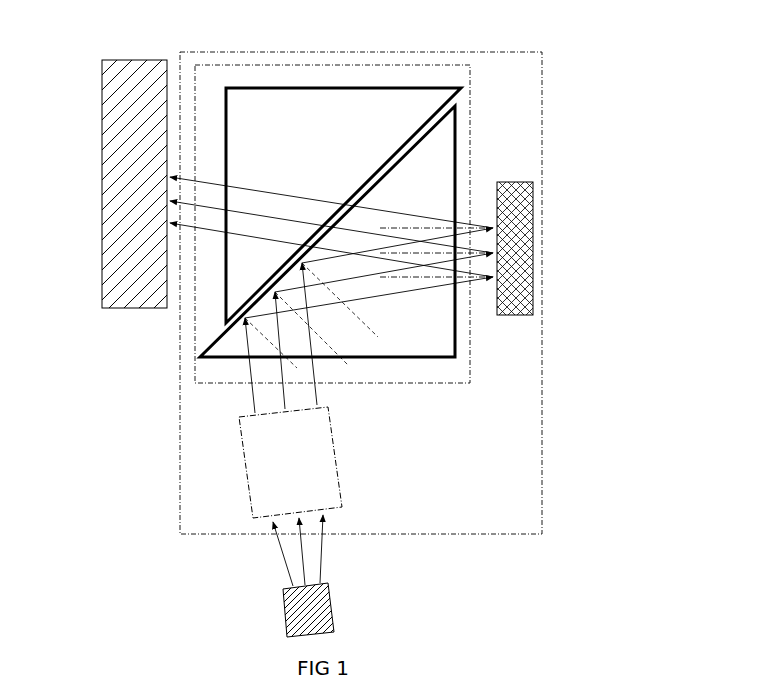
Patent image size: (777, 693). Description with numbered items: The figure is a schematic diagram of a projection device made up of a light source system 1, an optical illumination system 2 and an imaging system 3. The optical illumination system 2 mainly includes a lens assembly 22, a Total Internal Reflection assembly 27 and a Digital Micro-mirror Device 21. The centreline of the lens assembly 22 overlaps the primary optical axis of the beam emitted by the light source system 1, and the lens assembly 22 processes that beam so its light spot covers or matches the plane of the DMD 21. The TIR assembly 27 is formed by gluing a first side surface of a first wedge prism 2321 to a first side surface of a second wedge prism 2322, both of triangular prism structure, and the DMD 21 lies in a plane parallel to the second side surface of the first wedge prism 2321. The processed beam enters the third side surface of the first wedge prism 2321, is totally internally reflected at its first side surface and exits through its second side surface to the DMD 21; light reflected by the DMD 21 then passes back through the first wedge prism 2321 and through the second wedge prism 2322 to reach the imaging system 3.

The light source system 1 is at (330, 599).
The optical illumination system 2 is at (543, 383).
The imaging system 3 is at (102, 162).
The Digital Micro-mirror Device (DMD) 21 is at (532, 238).
The lens assembly 22 is at (338, 473).
The Total Internal Reflection (TIR) assembly 27 is at (423, 65).
The first wedge prism 2321 is at (457, 157).
The second wedge prism 2322 is at (300, 88).